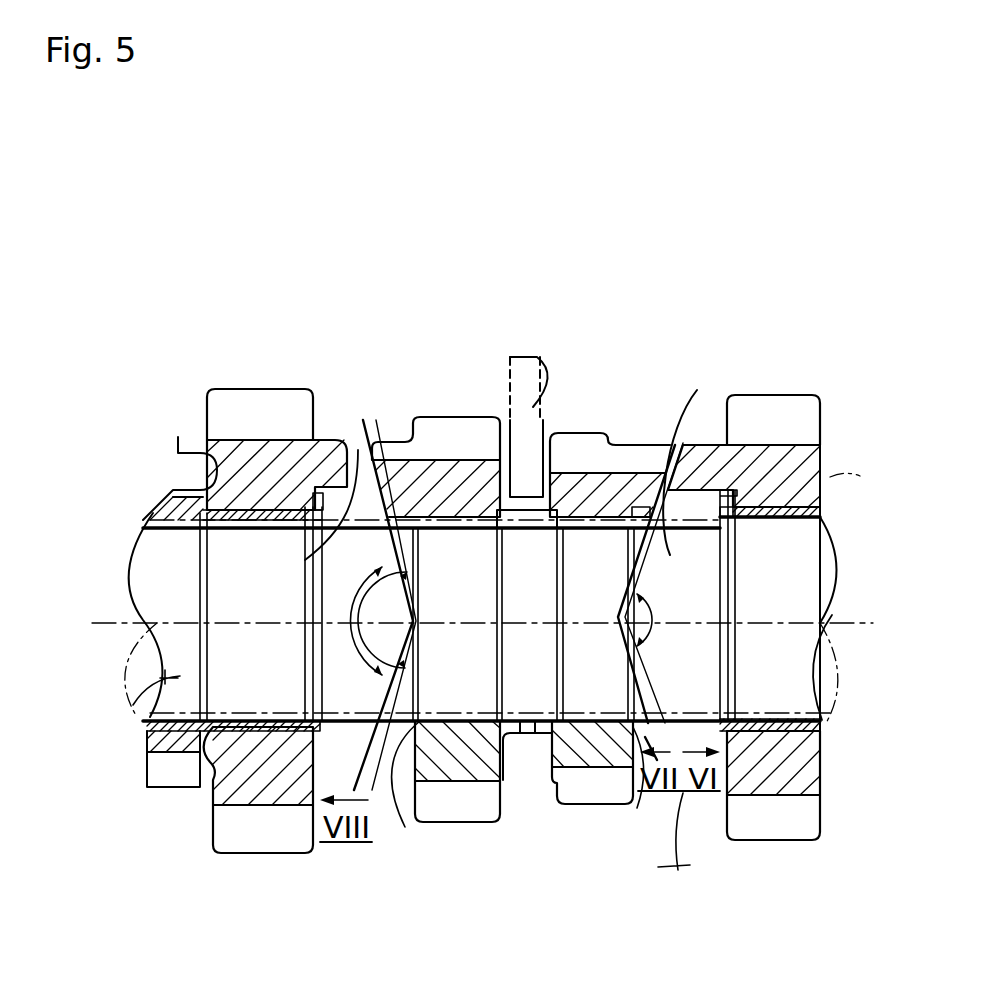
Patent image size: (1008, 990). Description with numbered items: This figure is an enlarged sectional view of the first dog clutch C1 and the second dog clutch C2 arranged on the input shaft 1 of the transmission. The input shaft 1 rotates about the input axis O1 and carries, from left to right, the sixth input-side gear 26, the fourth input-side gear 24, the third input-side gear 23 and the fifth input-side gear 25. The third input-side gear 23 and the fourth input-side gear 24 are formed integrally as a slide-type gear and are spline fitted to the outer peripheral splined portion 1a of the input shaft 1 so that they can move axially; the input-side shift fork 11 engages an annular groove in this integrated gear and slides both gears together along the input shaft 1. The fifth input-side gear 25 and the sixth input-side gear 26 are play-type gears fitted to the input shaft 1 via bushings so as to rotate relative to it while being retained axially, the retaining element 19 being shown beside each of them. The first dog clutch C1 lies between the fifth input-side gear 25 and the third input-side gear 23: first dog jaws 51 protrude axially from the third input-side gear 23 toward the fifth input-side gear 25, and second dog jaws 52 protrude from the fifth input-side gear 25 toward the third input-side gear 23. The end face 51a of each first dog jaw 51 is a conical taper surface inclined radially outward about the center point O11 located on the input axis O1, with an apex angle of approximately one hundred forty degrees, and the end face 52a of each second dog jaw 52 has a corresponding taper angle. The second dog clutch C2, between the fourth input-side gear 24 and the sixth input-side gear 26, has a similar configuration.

The input shaft 1 is at (137, 717).
The outer peripheral splined portion 1a is at (396, 839).
The input-side shift fork 11 is at (535, 410).
The collar / spacer 19 is at (215, 780).
The third input-side gear 23 is at (588, 804).
The fourth input-side gear 24 is at (458, 822).
The fifth input-side gear 25 is at (765, 843).
The sixth input-side gear 26 is at (263, 845).
The first dog jaws 51 is at (425, 440).
The end face of first dog jaw 51a is at (378, 528).
The second dog jaws 52 is at (333, 470).
The end face of second dog jaw 52a is at (358, 450).
The first dog clutch C1 is at (667, 409).
The second dog clutch C2 is at (345, 386).
The input axis O1 is at (137, 637).
The center point O11 is at (428, 620).